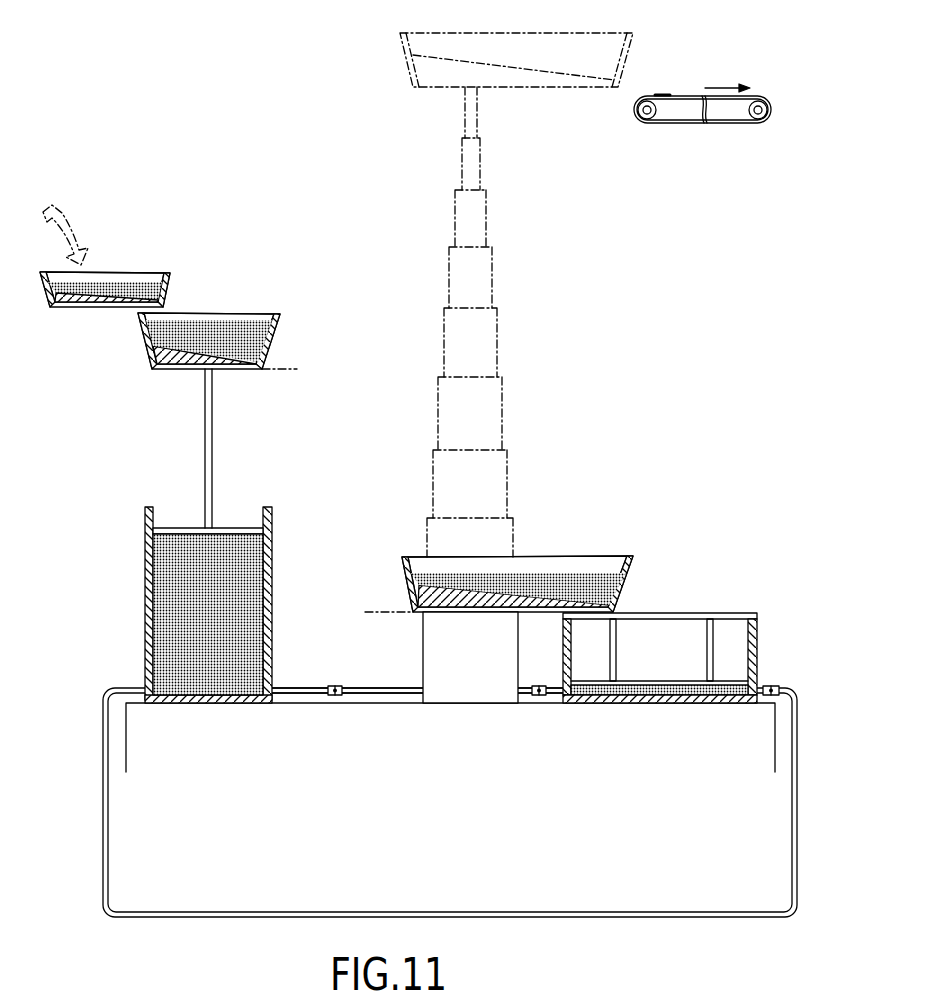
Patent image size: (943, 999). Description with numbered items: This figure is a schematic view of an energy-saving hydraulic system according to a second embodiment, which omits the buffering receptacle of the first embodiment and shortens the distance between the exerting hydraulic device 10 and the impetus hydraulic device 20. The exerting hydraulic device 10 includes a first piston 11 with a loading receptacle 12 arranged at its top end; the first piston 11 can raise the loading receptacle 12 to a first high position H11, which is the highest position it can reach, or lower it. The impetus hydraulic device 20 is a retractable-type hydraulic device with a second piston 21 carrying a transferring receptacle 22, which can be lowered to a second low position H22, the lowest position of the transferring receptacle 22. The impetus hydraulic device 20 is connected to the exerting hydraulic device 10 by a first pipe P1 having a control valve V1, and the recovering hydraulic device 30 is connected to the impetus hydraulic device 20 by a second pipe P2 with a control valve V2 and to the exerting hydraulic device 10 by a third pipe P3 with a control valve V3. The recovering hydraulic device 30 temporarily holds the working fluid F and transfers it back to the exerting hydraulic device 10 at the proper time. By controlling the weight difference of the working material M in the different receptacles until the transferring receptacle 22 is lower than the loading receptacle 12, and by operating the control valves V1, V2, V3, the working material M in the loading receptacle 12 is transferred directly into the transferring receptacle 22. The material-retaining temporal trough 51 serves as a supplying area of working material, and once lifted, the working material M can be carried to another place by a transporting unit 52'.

The exerting hydraulic device 10 is at (165, 464).
The first piston 11 is at (213, 428).
The loading receptacle 12 is at (140, 330).
The working material M is at (232, 320).
The working fluid F is at (178, 580).
The first high position H11 is at (301, 369).
The material-retaining temporal trough 51 is at (113, 258).
The transporting unit 52' is at (702, 154).
The impetus hydraulic device 20 is at (648, 573).
The second piston 21 is at (412, 653).
The transferring receptacle 22 is at (395, 576).
The second low position H22 is at (363, 612).
The recovering hydraulic device 30 is at (752, 594).
The control valve V1 is at (333, 700).
The control valve V2 is at (538, 700).
The control valve V3 is at (779, 687).
The first pipe P1 is at (386, 700).
The second pipe P2 is at (556, 700).
The third pipe P3 is at (485, 912).